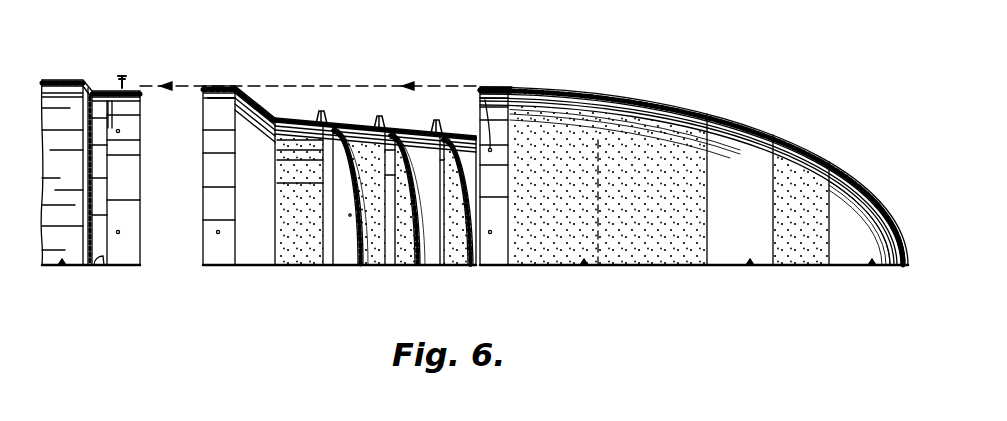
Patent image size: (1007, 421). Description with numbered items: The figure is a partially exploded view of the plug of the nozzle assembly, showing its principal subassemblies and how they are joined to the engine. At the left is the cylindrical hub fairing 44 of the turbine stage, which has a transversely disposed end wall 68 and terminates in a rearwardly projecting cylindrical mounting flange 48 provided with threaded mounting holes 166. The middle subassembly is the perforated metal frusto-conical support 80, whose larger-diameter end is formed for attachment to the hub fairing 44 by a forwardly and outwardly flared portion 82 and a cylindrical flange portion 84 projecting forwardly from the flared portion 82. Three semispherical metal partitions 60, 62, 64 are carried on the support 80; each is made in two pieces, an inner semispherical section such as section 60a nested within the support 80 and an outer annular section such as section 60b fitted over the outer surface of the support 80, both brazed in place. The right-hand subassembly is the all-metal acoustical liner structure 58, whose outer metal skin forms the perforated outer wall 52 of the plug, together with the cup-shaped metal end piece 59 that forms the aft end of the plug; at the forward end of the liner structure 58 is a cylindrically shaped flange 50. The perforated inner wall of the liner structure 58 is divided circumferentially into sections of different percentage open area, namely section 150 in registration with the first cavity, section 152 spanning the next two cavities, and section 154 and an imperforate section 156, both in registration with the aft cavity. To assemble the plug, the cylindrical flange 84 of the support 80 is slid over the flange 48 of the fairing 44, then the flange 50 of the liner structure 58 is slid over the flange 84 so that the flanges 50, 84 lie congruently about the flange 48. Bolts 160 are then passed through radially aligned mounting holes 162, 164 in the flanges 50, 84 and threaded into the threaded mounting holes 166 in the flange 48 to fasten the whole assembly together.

The hub fairing 44 is at (80, 80).
The mounting flange 48 is at (125, 93).
The bolts 160 is at (122, 74).
The threaded mounting holes 166 is at (119, 131).
The mounting hole 164 is at (220, 152).
The end wall 68 is at (101, 268).
The cylindrical flange portion 84 is at (226, 86).
The flared portion 82 is at (255, 110).
The frusto-conical support 80 is at (375, 122).
The outer annular section 60b is at (325, 113).
The forward partition 60 is at (345, 268).
The inner semispherical section 60a is at (350, 215).
The partition 62 is at (405, 268).
The partition 64 is at (460, 268).
The cylindrical flange 50 is at (490, 100).
The mounting hole 162 is at (482, 104).
The acoustical liner structure 58 is at (672, 98).
The outer wall 52 is at (608, 98).
The end piece 59 is at (862, 178).
The inner wall section 150 is at (553, 262).
The inner wall section 152 is at (630, 262).
The imperforate section 156 is at (728, 262).
The inner wall section 154 is at (802, 262).